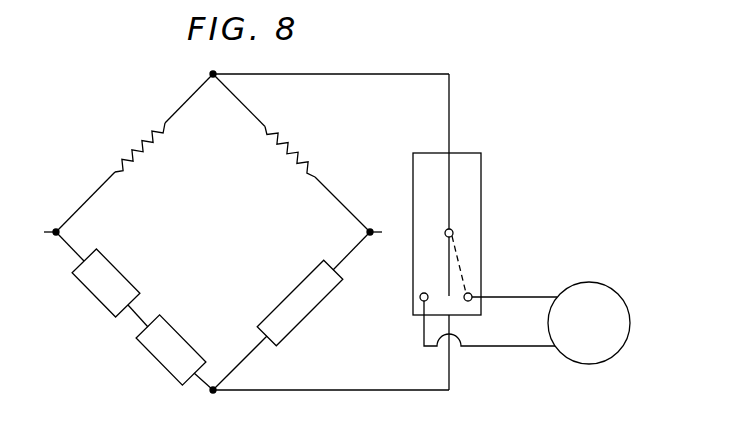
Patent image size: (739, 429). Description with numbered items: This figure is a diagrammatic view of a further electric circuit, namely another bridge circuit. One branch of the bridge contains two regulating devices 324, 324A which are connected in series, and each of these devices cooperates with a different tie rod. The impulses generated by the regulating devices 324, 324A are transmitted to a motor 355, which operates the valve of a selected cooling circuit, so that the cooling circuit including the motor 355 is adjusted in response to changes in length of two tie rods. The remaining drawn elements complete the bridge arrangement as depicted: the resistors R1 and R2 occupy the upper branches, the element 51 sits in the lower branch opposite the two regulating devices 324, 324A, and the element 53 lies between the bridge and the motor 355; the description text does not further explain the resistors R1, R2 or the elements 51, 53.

The bridge resistor R1 is at (127, 150).
The bridge resistor R2 is at (291, 147).
The regulating device 324 is at (113, 278).
The regulating device 324A is at (177, 381).
The resistance element 51 is at (297, 317).
The switch 53 is at (477, 184).
The motor 355 is at (556, 328).